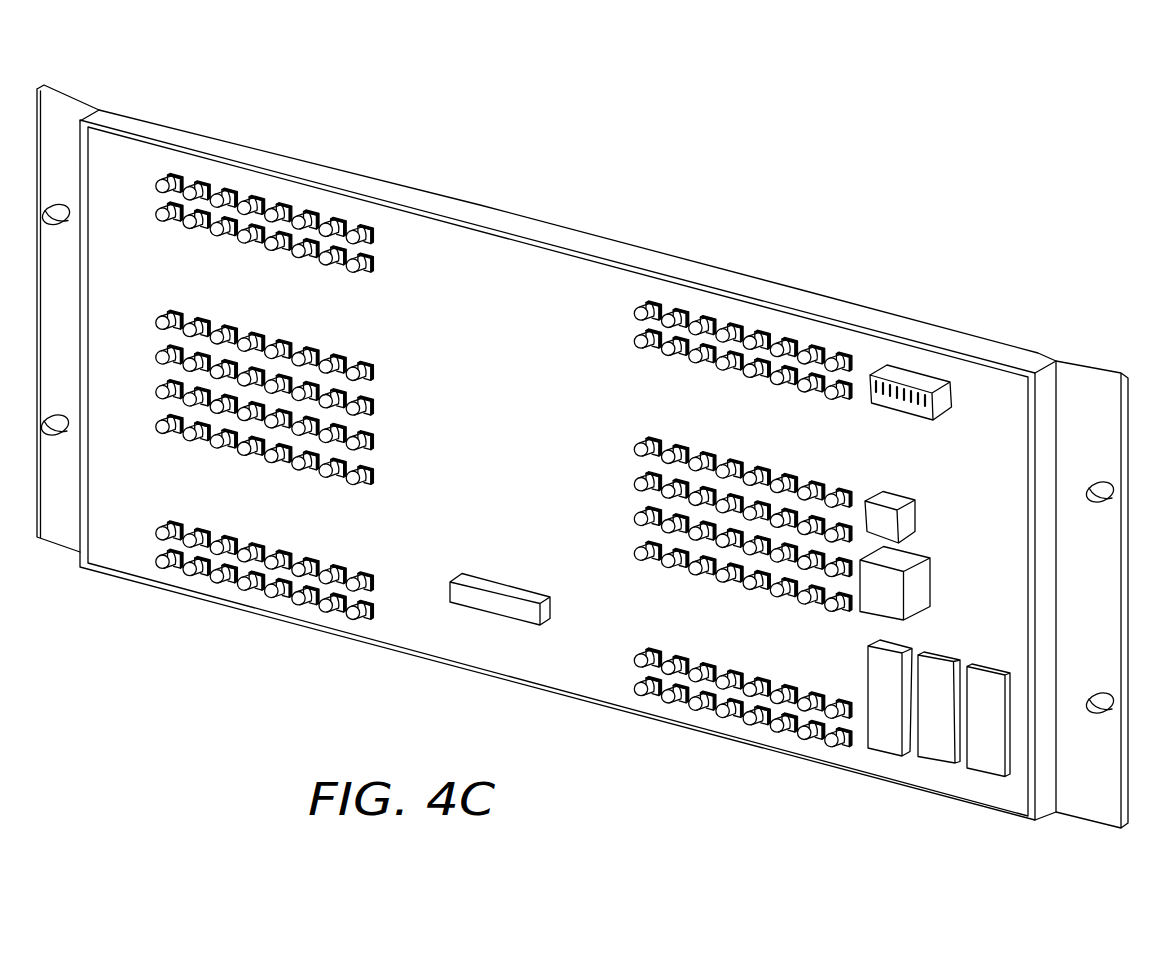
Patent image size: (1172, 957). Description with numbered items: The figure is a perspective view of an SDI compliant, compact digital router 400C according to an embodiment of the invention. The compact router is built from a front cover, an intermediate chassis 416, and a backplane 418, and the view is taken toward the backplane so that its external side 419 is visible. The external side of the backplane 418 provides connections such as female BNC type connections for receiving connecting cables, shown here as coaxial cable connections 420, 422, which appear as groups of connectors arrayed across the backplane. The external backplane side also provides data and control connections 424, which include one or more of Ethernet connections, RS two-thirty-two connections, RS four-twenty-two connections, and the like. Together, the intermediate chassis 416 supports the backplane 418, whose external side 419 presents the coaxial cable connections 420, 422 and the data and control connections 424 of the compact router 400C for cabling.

The compact digital router 400C is at (754, 226).
The intermediate chassis 416 is at (1098, 395).
The backplane 418 is at (1017, 348).
The external side 419 is at (910, 377).
The coaxial cable connections 420 is at (364, 657).
The coaxial cable connections 422 is at (846, 783).
The data and control connections 424 is at (1002, 827).